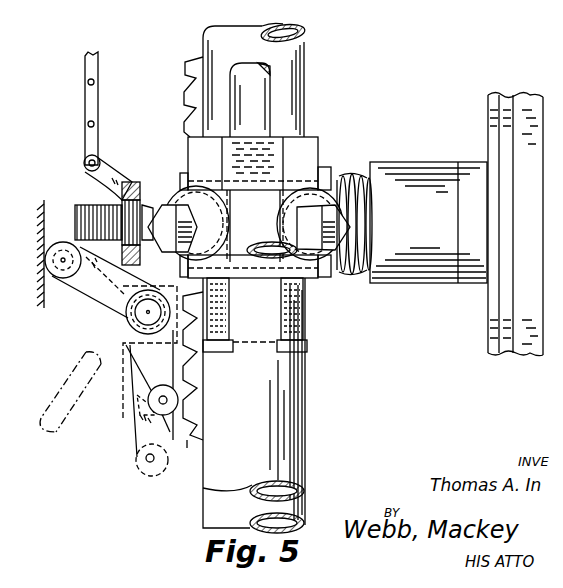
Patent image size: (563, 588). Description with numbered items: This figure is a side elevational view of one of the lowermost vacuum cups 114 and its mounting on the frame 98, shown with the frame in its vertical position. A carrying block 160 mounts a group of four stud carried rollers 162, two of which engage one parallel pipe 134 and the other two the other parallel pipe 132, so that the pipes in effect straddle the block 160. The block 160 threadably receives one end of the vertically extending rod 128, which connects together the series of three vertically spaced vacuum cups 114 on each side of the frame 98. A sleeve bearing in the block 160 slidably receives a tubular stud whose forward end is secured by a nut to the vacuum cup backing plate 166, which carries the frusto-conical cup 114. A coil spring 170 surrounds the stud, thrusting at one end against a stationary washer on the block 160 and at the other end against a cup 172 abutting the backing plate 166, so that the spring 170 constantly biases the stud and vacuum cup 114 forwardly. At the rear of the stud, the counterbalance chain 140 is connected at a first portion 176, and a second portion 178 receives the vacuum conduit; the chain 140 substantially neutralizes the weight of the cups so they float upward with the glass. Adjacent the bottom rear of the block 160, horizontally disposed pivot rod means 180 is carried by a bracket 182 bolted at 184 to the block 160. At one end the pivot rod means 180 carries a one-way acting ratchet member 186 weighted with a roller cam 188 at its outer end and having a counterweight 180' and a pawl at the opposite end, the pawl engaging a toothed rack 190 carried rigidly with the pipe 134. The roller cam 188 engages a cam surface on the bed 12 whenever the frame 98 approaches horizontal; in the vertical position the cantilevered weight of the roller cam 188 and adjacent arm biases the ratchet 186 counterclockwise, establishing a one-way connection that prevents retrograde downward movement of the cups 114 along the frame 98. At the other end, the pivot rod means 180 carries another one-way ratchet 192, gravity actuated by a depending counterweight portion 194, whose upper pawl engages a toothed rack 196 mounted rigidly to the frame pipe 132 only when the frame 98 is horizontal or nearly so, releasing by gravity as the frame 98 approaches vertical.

The bed 12 is at (44, 226).
The frame 98 is at (343, 25).
The vacuum cup 114 is at (533, 95).
The vertically extending rod 128 is at (283, 82).
The parallel pipe 132 is at (306, 52).
The parallel pipe 134 is at (305, 466).
The counterbalance chain 140 is at (85, 76).
The carrying block 160 is at (310, 137).
The stud carried roller 162 is at (300, 190).
The vacuum cup backing plate 166 is at (478, 162).
The coil spring 170 is at (358, 272).
The cup 172 is at (418, 162).
The chain connection 176 is at (113, 160).
The second portion 178 is at (107, 211).
The pivot rod means 180 is at (132, 353).
The counterweight 180' is at (94, 392).
The bracket 182 is at (270, 346).
The bolt 184 is at (218, 353).
The one-way acting ratchet member 186 is at (112, 311).
The roller cam 188 is at (60, 279).
The toothed rack 190 is at (187, 448).
The one-way ratchet 192 is at (136, 427).
The counterweight portion 194 is at (144, 474).
The toothed rack 196 is at (192, 64).